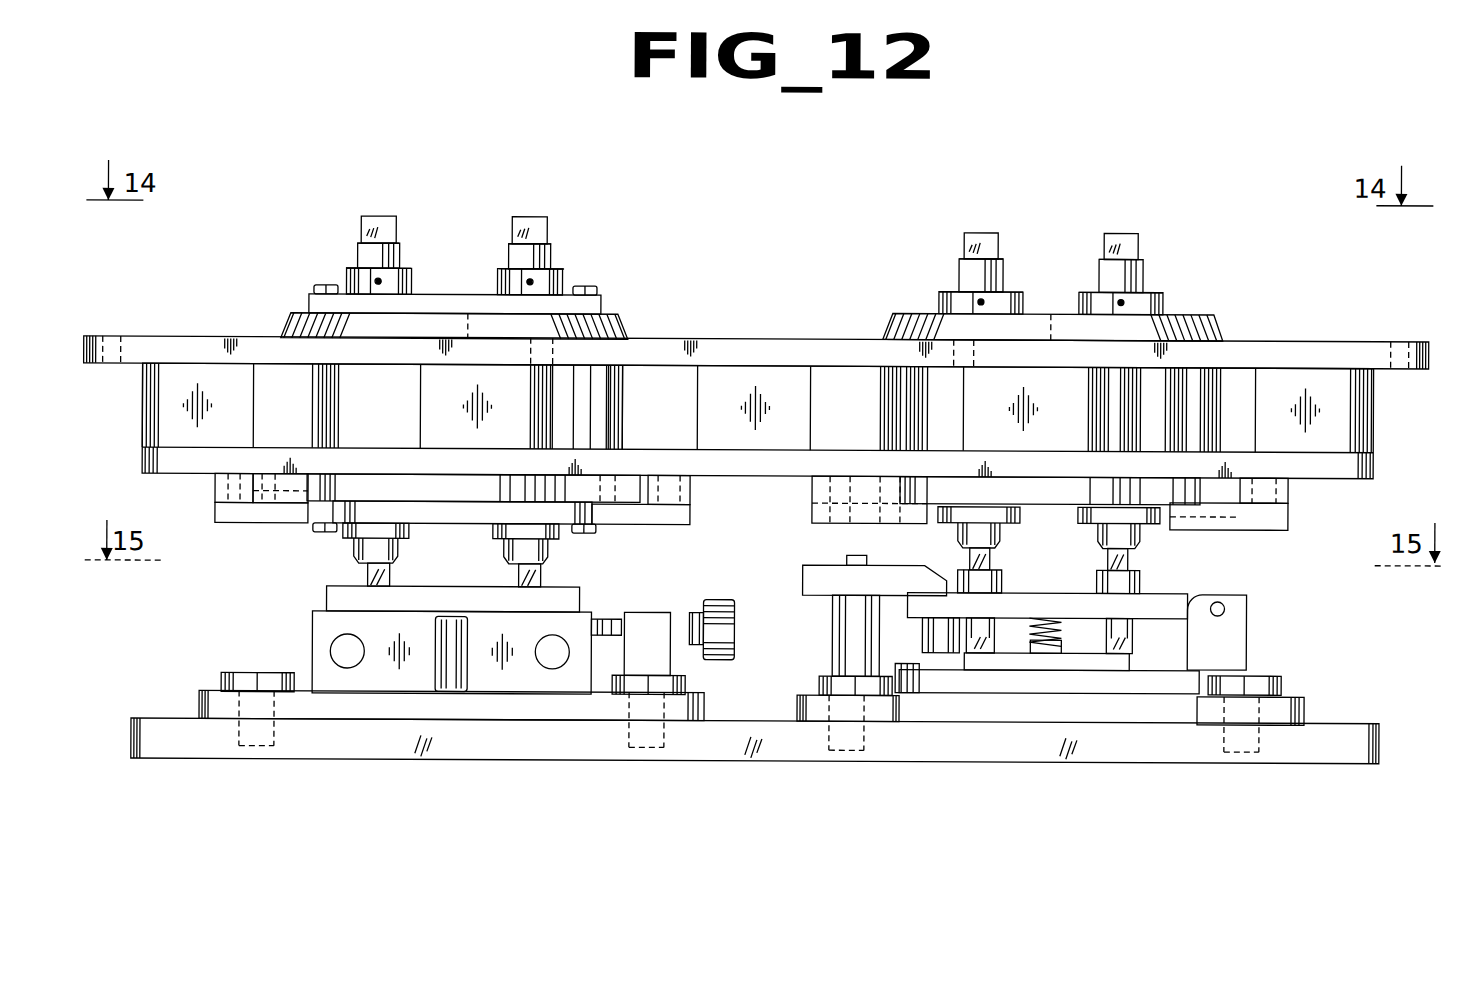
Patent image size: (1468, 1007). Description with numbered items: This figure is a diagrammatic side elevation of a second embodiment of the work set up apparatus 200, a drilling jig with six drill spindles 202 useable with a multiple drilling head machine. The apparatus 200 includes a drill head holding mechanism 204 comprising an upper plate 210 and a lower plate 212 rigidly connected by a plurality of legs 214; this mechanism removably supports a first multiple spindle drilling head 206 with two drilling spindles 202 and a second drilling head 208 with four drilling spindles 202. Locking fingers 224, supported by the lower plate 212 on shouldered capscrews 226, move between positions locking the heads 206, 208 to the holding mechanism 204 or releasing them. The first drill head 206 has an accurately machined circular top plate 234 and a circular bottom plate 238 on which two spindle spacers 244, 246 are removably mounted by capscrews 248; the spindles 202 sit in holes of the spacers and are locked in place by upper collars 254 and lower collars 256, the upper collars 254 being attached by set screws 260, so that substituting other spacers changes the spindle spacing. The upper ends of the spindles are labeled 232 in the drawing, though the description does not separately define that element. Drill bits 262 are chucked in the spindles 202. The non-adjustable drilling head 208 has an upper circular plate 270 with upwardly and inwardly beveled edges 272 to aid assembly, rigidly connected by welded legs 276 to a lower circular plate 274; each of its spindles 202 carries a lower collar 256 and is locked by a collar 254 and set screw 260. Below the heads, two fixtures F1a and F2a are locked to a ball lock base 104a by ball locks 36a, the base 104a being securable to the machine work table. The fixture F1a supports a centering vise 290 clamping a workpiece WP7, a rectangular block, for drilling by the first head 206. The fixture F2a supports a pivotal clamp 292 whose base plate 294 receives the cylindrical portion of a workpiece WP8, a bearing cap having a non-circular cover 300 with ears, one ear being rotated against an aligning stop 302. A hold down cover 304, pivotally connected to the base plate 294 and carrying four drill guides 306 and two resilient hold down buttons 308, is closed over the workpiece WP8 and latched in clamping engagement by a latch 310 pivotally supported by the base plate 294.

The work set up apparatus 200 is at (852, 180).
The drill spindle 202 is at (510, 256).
The drill head holding mechanism 204 is at (741, 326).
The first multiple spindle drilling head 206 is at (620, 319).
The second drilling head 208 is at (1209, 310).
The upper plate 210 is at (637, 347).
The lower plate 212 is at (786, 455).
The legs 214 is at (152, 407).
The locking fingers 224 is at (215, 489).
The shouldered capscrews 226 is at (215, 517).
The drive shaft end 232 is at (520, 222).
The circular top plate 234 is at (288, 328).
The circular bottom plate 238 is at (378, 490).
The spindle spacer 244 is at (600, 300).
The spindle spacer 246 is at (555, 522).
The capscrews 248 is at (313, 288).
The upper collars 254 is at (345, 272).
The lower collars 256 is at (493, 530).
The set screws 260 is at (528, 280).
The drill bits 262 is at (520, 574).
The upper circular plate 270 is at (923, 320).
The beveled edges 272 is at (882, 325).
The lower circular plate 274 is at (1022, 492).
The legs 276 is at (623, 410).
The centering vise 290 is at (313, 637).
The pivotal clamp 292 is at (1247, 597).
The base plate 294 is at (1088, 690).
The non-circular cover 300 is at (990, 678).
The aligning stop 302 is at (930, 703).
The hold down cover 304 is at (1152, 598).
The drill guides 306 is at (1002, 594).
The resilient hold down buttons 308 is at (1052, 652).
The latch 310 is at (803, 567).
The ball locks 36a is at (222, 678).
The fixture F1a is at (200, 698).
The fixture F2a is at (1283, 698).
The ball lock base 104a is at (512, 745).
The workpiece WP7 is at (327, 602).
The workpiece WP8 is at (1125, 658).